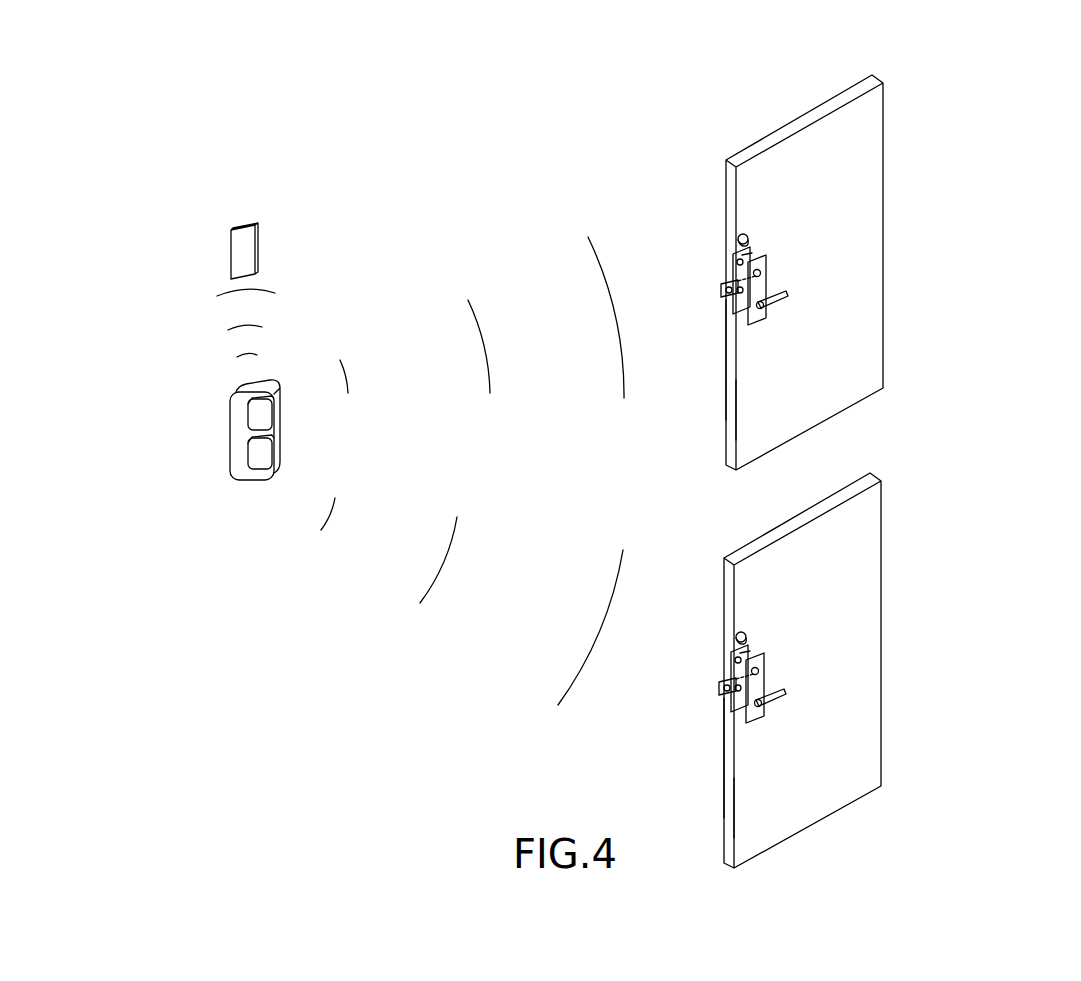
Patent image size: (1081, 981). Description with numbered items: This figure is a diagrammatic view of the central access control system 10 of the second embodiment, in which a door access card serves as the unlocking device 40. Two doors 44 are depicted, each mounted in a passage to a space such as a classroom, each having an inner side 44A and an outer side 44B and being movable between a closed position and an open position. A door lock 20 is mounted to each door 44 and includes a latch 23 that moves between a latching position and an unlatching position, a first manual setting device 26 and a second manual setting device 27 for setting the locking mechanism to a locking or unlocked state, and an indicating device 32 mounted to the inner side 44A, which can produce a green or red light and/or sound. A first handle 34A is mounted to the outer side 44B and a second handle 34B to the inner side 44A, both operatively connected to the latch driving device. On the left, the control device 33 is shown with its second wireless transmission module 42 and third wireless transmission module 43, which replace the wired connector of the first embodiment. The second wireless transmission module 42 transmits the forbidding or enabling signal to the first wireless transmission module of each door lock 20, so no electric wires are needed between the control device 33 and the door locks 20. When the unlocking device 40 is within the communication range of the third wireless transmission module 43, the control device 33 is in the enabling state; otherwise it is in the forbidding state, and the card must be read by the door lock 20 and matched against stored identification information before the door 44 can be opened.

The central access control system 10 is at (985, 156).
The door lock 20 is at (769, 240).
The latch 23 is at (722, 293).
The first manual setting device 26 is at (761, 273).
The second manual setting device 27 is at (737, 258).
The indicating device 32 is at (738, 237).
The control device 33 is at (232, 440).
The first handle 34A is at (737, 284).
The second handle 34B is at (790, 294).
The unlocking device 40 is at (230, 254).
The second wireless transmission module 42 is at (258, 458).
The third wireless transmission module 43 is at (258, 410).
The door 44 is at (885, 283).
The inner side 44A is at (726, 375).
The outer side 44B is at (748, 410).